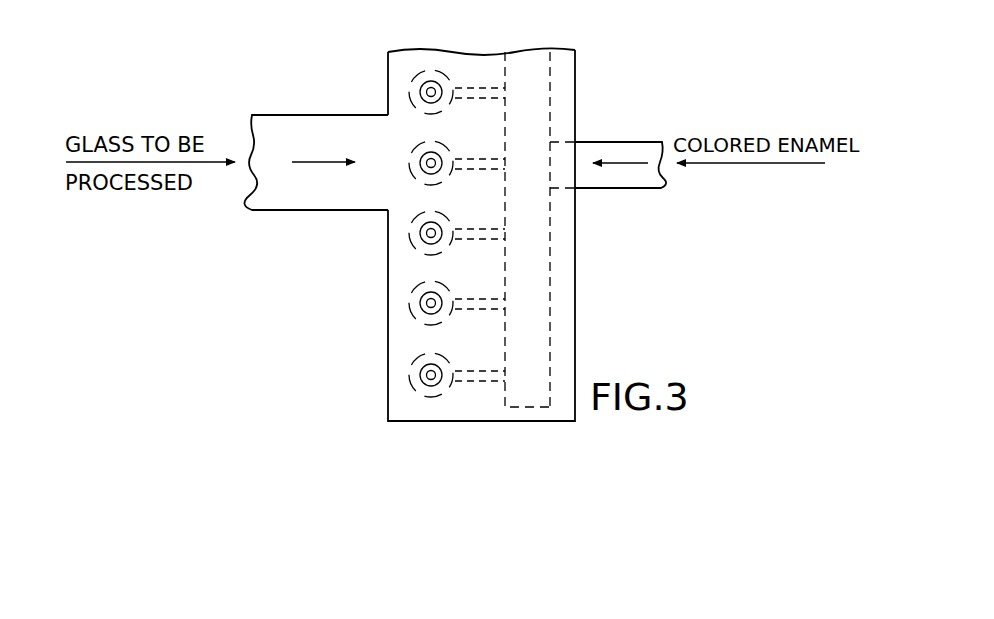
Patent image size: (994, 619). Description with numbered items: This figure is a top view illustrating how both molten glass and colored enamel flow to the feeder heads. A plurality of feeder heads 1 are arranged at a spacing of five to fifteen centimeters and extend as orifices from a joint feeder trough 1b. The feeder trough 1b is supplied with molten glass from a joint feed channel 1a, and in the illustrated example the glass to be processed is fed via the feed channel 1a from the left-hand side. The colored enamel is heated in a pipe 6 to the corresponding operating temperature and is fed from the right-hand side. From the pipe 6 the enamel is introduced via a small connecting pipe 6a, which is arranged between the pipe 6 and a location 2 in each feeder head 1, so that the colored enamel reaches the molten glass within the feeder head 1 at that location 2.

The feeder head 1 is at (428, 88).
The joint feed channel 1a is at (317, 138).
The joint feeder trough 1b is at (479, 398).
The location in the feeder head 2 is at (459, 84).
The pipe 6 is at (543, 78).
The small connecting pipe 6a is at (488, 84).